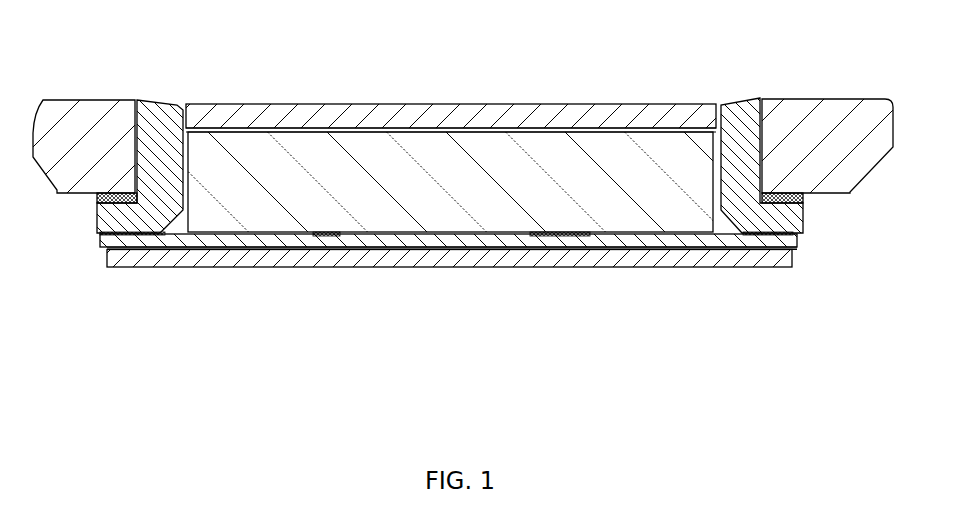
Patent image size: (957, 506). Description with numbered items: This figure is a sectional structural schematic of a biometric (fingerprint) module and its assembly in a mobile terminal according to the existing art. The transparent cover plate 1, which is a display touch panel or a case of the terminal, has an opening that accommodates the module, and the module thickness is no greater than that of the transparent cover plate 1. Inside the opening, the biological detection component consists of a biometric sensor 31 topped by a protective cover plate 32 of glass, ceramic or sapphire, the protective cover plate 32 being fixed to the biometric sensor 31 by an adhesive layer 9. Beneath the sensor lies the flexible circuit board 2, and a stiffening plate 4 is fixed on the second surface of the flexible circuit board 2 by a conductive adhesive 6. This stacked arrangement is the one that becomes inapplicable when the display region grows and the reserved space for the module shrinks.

The transparent cover plate 1 is at (102, 107).
The flexible circuit board 2 is at (233, 247).
The stiffening plate 4 is at (540, 257).
The conductive adhesive 6 is at (425, 250).
The adhesive layer 9 is at (453, 137).
The biometric sensor 31 is at (570, 137).
The protective cover plate 32 is at (320, 118).